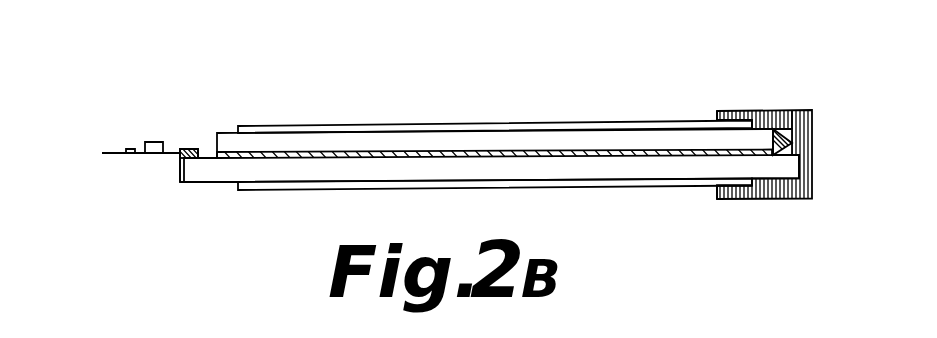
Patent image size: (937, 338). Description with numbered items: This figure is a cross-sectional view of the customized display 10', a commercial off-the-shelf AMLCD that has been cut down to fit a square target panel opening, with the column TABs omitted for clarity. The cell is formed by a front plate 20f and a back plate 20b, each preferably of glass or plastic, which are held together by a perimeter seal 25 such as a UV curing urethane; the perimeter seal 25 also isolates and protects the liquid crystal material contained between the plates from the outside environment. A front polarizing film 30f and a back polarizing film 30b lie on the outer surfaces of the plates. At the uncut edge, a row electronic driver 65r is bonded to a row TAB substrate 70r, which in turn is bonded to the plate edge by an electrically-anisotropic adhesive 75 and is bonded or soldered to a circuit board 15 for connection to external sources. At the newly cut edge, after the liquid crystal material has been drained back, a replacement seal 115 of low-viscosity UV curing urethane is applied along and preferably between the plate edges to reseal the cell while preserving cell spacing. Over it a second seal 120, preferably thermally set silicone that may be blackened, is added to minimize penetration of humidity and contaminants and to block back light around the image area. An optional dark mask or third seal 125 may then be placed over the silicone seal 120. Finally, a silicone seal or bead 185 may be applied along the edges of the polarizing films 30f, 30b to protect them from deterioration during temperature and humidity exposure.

The customized display 10' is at (689, 66).
The circuit board 15 is at (110, 153).
The row electronic driver 65r is at (153, 142).
The row TAB substrate 70r is at (178, 151).
The back plate 20b is at (180, 182).
The electrically-anisotropic adhesive 75 is at (189, 160).
The front plate 20f is at (217, 132).
The front polarizing film 30f is at (277, 125).
The back polarizing film 30b is at (260, 189).
The perimeter seal 25 is at (606, 153).
The replacement seal 115 is at (770, 155).
The second seal 120 is at (792, 142).
The mask or third seal 125 is at (801, 122).
The silicone seal or bead 185 is at (752, 123).